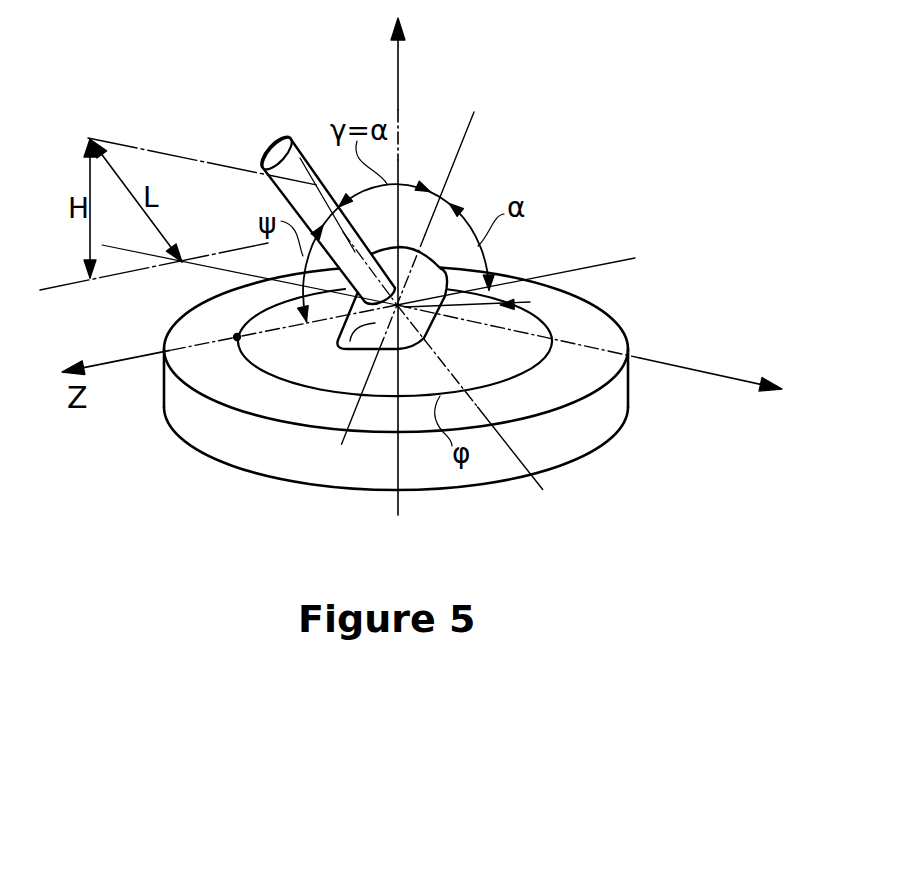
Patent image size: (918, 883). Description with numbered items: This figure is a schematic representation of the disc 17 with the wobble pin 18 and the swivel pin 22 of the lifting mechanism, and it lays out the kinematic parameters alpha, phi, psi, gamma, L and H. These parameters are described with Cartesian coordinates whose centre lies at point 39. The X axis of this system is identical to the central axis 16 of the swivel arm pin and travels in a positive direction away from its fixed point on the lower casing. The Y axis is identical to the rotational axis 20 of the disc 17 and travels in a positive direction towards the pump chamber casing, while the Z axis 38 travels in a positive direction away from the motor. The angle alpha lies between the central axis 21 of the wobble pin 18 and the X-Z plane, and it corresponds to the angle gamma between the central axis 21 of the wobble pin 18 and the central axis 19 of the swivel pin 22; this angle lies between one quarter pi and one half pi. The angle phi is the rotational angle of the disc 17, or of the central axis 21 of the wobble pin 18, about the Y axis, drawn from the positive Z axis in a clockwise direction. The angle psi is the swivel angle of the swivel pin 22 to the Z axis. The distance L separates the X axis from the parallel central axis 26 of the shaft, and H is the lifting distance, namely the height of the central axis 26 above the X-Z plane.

The central axis of the swivel arm pin 16 is at (707, 370).
The disc 17 is at (237, 382).
The wobble pin 18 is at (348, 346).
The central axis of the swivel pin 19 is at (517, 452).
The rotational axis of the disc 20 is at (401, 80).
The central axis of the wobble pin 21 is at (466, 133).
The swivel pin 22 is at (300, 160).
The central axis of the shaft 26 is at (157, 150).
The Z axis 38 is at (607, 263).
The centre point of the coordinate system 39 is at (430, 330).